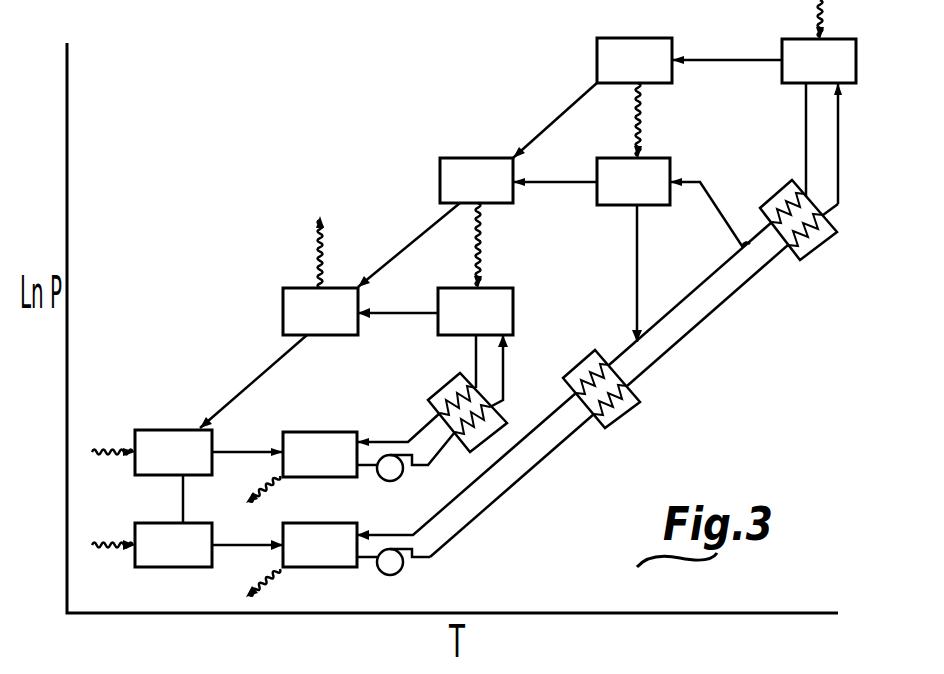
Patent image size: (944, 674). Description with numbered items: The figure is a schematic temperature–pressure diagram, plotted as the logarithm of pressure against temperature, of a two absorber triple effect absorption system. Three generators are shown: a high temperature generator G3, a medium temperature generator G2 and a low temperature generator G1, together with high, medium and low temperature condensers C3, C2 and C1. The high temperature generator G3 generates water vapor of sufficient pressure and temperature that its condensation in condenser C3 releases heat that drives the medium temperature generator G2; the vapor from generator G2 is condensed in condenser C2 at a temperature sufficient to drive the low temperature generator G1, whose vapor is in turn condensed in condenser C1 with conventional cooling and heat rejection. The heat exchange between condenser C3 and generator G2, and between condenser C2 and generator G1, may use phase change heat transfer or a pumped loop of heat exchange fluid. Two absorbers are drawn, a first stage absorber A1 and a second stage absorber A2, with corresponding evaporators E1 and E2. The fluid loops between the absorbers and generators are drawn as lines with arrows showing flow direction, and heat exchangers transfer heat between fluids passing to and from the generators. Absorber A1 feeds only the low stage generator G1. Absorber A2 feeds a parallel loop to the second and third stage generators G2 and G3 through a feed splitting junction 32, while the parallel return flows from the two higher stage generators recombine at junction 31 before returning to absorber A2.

The junction 31 is at (636, 344).
The feed splitting junction 32 is at (766, 268).
The low temperature condenser C1 is at (320, 311).
The medium temperature condenser C2 is at (476, 181).
The high temperature condenser C3 is at (634, 61).
The low temperature generator G1 is at (475, 311).
The medium temperature generator G2 is at (633, 181).
The high temperature generator G3 is at (819, 61).
The first stage evaporator E1 is at (173, 453).
The second stage evaporator E2 is at (173, 545).
The first stage absorber A1 is at (320, 455).
The second stage absorber A2 is at (320, 545).